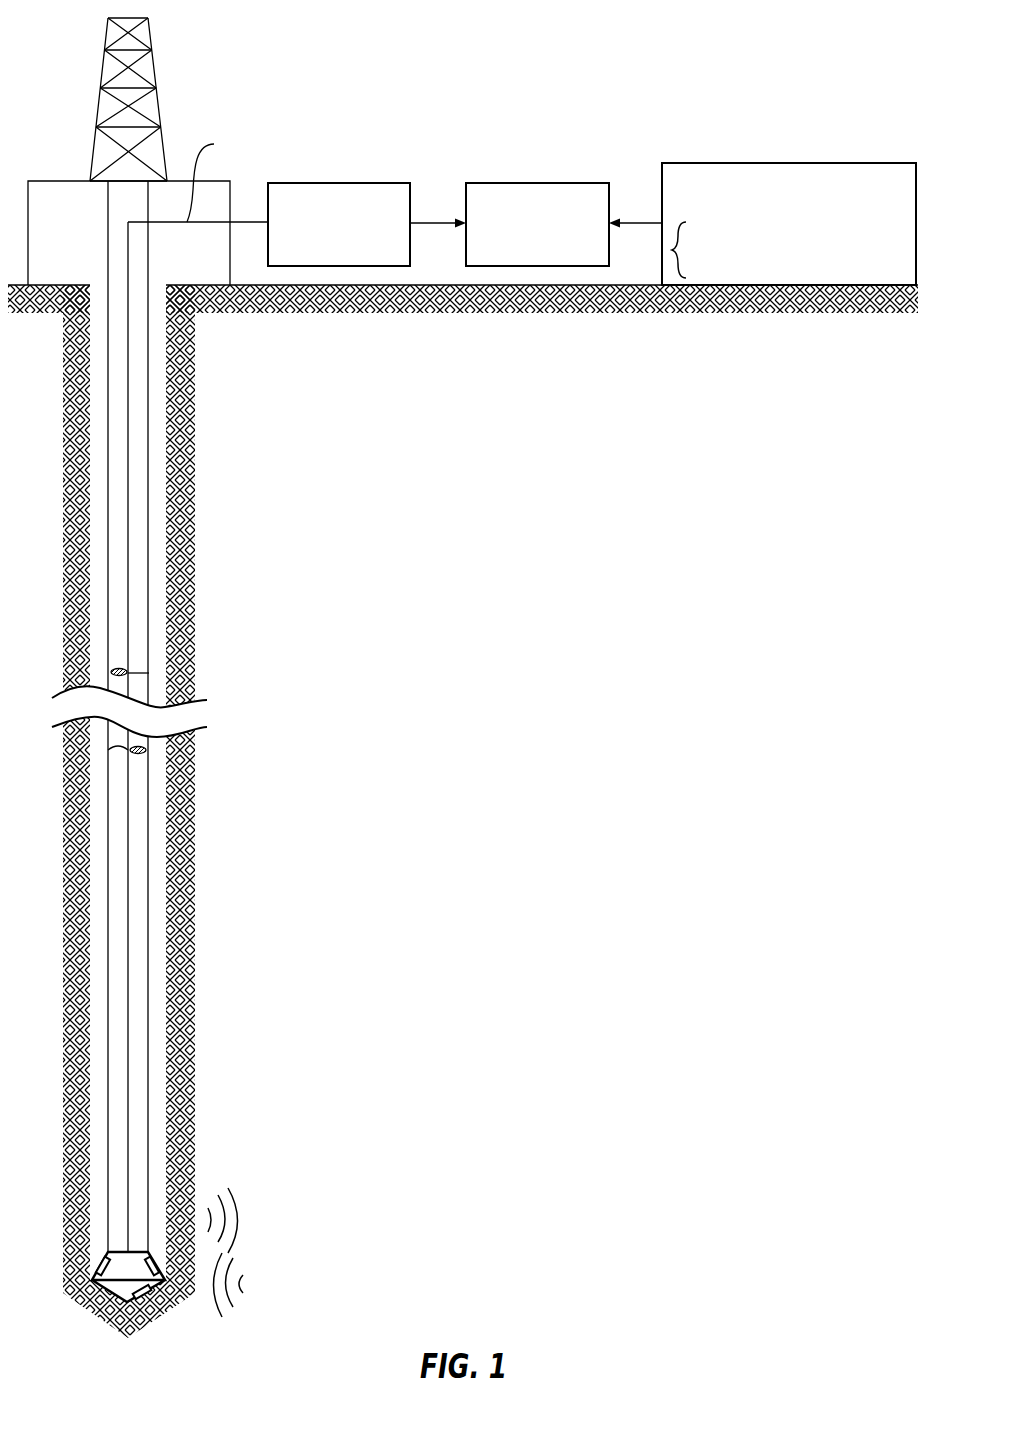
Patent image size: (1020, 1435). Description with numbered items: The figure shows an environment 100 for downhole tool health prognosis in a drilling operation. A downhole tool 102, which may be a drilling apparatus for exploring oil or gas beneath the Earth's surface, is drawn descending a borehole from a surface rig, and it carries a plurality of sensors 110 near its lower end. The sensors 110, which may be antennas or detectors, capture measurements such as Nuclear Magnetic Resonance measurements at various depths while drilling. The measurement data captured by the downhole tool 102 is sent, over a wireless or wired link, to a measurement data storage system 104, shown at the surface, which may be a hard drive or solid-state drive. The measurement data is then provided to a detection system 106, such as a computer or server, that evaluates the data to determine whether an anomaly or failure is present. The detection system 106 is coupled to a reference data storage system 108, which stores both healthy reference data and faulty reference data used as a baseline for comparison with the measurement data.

The environment 100 is at (834, 64).
The downhole tool 102 is at (100, 1252).
The measurement data storage system 104 is at (353, 257).
The detection system 106 is at (552, 257).
The reference data storage system 108 is at (877, 210).
The sensors 110 is at (100, 1265).